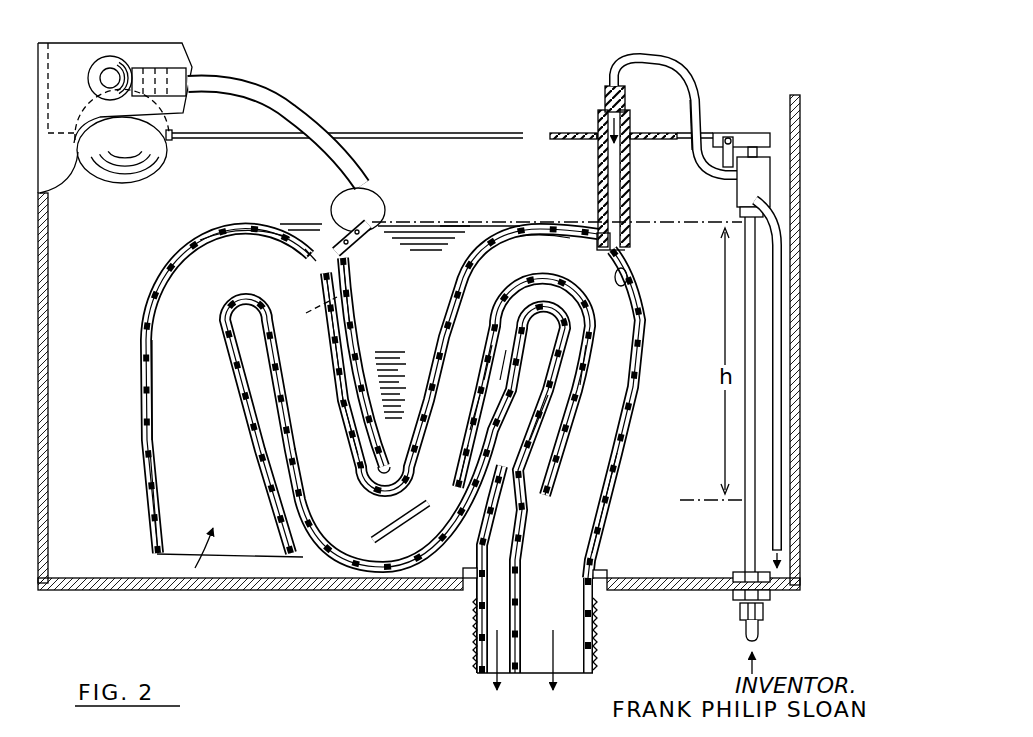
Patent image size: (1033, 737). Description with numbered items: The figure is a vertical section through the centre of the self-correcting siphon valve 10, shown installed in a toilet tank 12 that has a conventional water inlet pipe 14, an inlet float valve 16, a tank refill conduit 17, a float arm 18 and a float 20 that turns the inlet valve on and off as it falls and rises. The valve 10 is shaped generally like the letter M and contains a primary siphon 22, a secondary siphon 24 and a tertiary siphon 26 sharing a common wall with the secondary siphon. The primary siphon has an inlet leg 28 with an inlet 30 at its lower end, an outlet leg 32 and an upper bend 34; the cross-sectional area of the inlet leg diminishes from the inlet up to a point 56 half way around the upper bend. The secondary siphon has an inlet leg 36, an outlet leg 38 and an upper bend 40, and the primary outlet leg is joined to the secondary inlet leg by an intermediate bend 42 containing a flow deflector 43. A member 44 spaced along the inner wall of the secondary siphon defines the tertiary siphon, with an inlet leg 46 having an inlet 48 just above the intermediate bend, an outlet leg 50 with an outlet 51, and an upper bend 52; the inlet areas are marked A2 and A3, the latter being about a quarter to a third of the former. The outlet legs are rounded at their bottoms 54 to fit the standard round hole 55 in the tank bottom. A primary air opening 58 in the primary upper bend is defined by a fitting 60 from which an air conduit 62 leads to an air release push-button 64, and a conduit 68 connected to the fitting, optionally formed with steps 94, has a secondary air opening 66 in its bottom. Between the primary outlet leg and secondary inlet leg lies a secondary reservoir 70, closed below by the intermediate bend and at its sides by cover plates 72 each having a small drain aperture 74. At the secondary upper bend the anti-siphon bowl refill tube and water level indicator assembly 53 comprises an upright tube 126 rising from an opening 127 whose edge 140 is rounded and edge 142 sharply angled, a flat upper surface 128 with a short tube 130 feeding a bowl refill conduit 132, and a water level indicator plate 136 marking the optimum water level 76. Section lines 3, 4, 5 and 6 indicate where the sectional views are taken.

The self-correcting siphon valve 10 is at (122, 379).
The toilet tank 12 is at (120, 590).
The water inlet pipe 14 is at (768, 634).
The inlet float valve 16 is at (773, 180).
The tank refill conduit 17 is at (783, 305).
The float arm 18 is at (452, 131).
The float 20 is at (108, 175).
The primary siphon 22 is at (160, 302).
The secondary siphon 24 is at (641, 315).
The tertiary siphon 26 is at (548, 420).
The inlet leg 28 is at (170, 470).
The inlet 30 is at (238, 557).
The outlet leg 32 is at (333, 420).
The upper bend 34 is at (185, 242).
The inlet leg 36 is at (447, 296).
The outlet leg 38 is at (622, 455).
The upper bend 40 is at (532, 232).
The intermediate bend 42 is at (345, 550).
The flow deflector 43 is at (394, 526).
The member 44 is at (472, 414).
The inlet leg 46 is at (492, 365).
The inlet 48 is at (455, 463).
The outlet leg 50 is at (574, 362).
The outlet 51 is at (508, 668).
The upper bend 52 is at (550, 283).
The anti-siphon bowl refill tube and water level indicator assembly 53 is at (579, 112).
The rounded bottoms 54 is at (474, 633).
The round hole 55 is at (598, 600).
The point 56 is at (237, 226).
The primary air opening 58 is at (318, 262).
The fitting 60 is at (310, 246).
The air conduit 62 is at (322, 118).
The air release push-button 64 is at (112, 56).
The secondary air opening 66 is at (358, 366).
The conduit 68 is at (357, 283).
The secondary reservoir 70 is at (410, 226).
The cover plates 72 is at (453, 226).
The drain aperture 74 is at (383, 464).
The water level 76 is at (778, 132).
The steps 94 is at (306, 316).
The upright tube 126 is at (631, 181).
The opening 127 is at (614, 252).
The flat upper surface 128 is at (626, 111).
The short tube 130 is at (603, 103).
The bowl refill conduit 132 is at (693, 63).
The water level indicator plate 136 is at (582, 141).
The rounded edge 140 is at (628, 282).
The sharply angled edge 142 is at (600, 231).
The cross-sectional area A2 is at (470, 262).
The cross-sectional area A3 is at (497, 348).
The section line 3— 3 is at (250, 362).
The section line 4— 4 is at (538, 362).
The section line 5— 5 is at (467, 500).
The section line 6— 6 is at (447, 600).